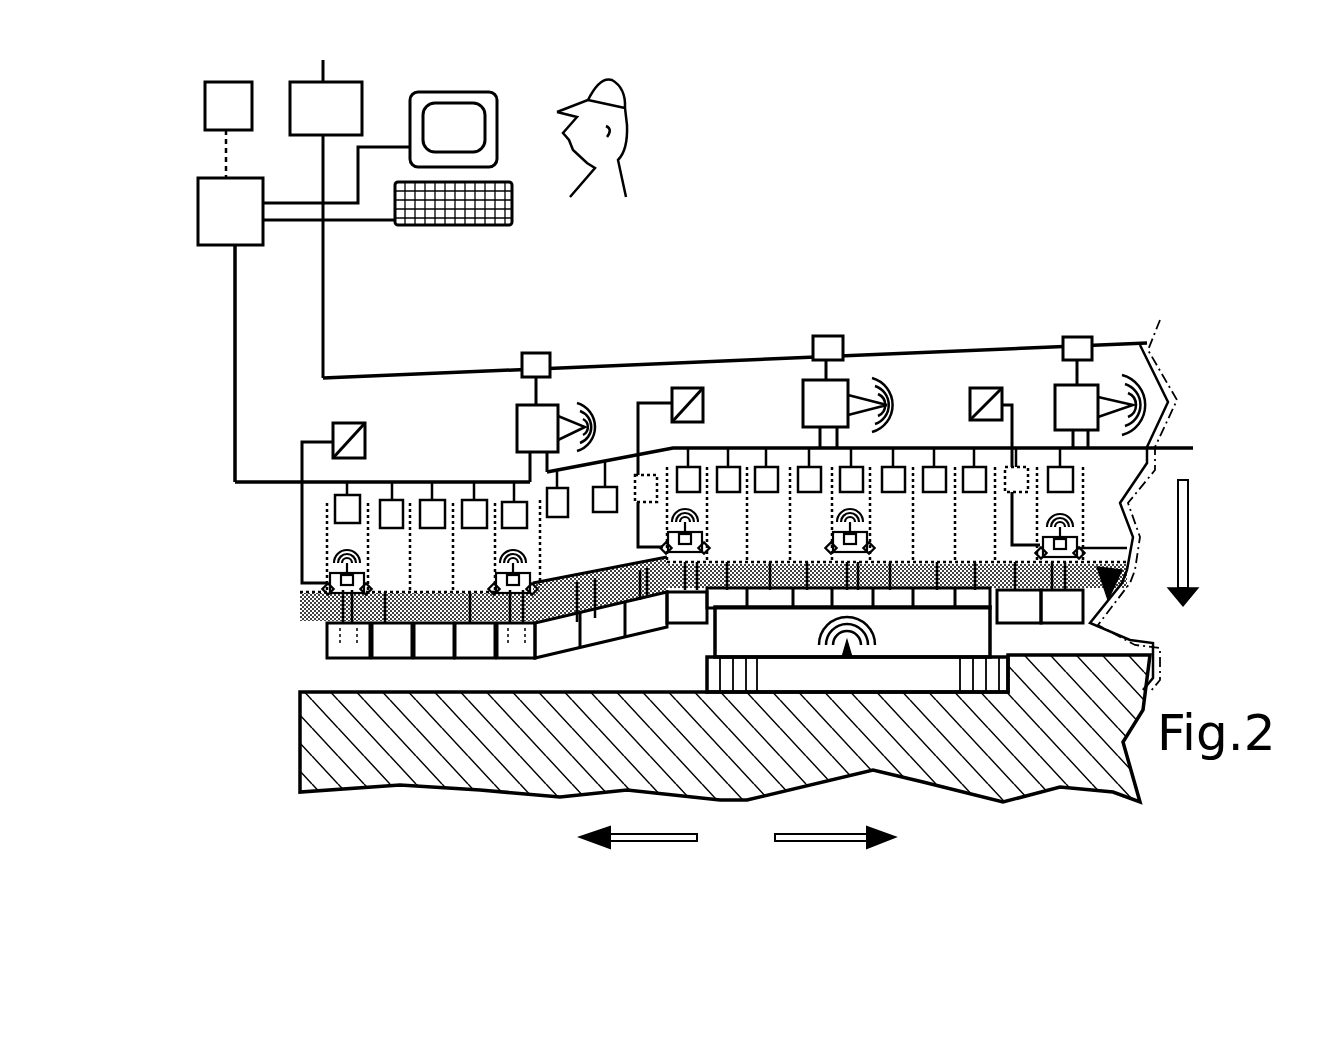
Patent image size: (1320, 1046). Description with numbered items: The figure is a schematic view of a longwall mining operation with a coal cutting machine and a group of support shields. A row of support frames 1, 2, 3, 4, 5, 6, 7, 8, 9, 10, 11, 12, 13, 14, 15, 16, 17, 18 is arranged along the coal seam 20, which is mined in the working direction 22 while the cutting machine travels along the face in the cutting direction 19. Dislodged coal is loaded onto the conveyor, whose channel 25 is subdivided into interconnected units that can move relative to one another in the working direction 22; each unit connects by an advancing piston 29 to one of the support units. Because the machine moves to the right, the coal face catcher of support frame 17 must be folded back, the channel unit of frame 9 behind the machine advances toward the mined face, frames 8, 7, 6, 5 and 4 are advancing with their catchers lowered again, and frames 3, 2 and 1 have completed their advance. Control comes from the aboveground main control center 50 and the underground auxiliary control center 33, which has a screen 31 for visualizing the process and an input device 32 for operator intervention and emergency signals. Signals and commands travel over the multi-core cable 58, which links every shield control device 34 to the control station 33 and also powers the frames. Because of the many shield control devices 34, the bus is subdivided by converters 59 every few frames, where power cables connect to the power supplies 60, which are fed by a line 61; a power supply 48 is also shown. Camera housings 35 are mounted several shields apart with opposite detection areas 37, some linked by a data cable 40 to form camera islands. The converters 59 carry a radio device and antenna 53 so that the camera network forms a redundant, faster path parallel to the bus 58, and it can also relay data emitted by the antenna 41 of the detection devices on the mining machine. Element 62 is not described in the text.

The support frame 1 is at (340, 554).
The support frame 2 is at (384, 562).
The support frame 3 is at (424, 562).
The support frame 4 is at (466, 562).
The support frame 5 is at (506, 552).
The support frame 6 is at (549, 561).
The support frame 7 is at (597, 551).
The support frame 8 is at (639, 538).
The support frame 9 is at (682, 517).
The support frame 10 is at (713, 540).
The support frame 11 is at (753, 542).
The support frame 12 is at (793, 542).
The support frame 13 is at (837, 517).
The support frame 14 is at (878, 551).
The support frame 15 is at (917, 551).
The support frame 16 is at (957, 551).
The support frame 17 is at (1000, 542).
The support frame 18 is at (1045, 522).
The cutting direction 19 is at (745, 852).
The coal seam 20 is at (538, 756).
The working direction 22 is at (777, 646).
The channel 25 is at (705, 623).
The advancing piston 29 is at (347, 602).
The screen 31 is at (442, 141).
The input device 32 is at (437, 225).
The auxiliary control center 33 is at (217, 220).
The shield control device 34 is at (355, 517).
The camera housing 35 is at (328, 582).
The detection area 37 is at (1117, 580).
The data cable 40 is at (603, 570).
The antenna 41 is at (865, 640).
The power supply 48 is at (362, 433).
The main control center 50 is at (216, 108).
The antenna 53 is at (585, 405).
The multi-core cable 58 is at (266, 492).
The converter 59 is at (550, 436).
The power supply 60 is at (548, 352).
The line 61 is at (325, 317).
The interface 62 is at (313, 124).